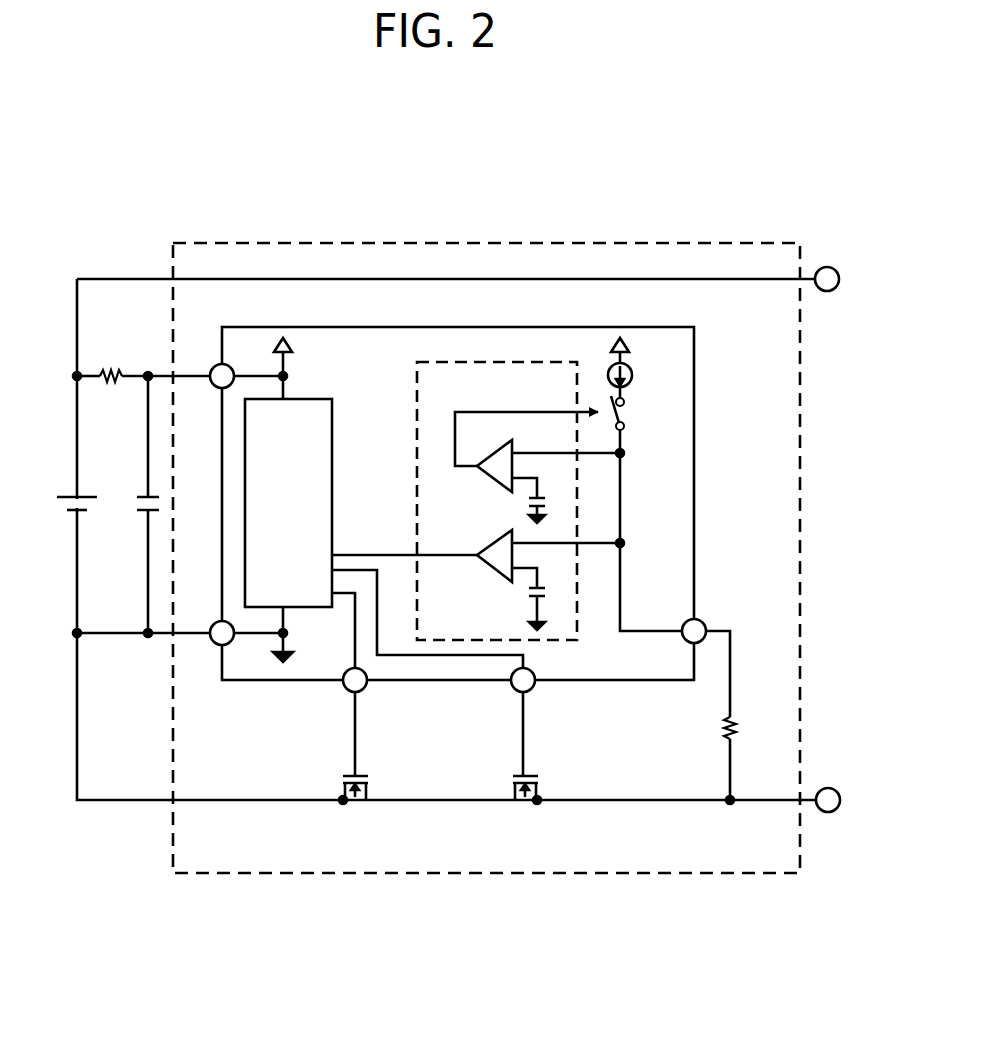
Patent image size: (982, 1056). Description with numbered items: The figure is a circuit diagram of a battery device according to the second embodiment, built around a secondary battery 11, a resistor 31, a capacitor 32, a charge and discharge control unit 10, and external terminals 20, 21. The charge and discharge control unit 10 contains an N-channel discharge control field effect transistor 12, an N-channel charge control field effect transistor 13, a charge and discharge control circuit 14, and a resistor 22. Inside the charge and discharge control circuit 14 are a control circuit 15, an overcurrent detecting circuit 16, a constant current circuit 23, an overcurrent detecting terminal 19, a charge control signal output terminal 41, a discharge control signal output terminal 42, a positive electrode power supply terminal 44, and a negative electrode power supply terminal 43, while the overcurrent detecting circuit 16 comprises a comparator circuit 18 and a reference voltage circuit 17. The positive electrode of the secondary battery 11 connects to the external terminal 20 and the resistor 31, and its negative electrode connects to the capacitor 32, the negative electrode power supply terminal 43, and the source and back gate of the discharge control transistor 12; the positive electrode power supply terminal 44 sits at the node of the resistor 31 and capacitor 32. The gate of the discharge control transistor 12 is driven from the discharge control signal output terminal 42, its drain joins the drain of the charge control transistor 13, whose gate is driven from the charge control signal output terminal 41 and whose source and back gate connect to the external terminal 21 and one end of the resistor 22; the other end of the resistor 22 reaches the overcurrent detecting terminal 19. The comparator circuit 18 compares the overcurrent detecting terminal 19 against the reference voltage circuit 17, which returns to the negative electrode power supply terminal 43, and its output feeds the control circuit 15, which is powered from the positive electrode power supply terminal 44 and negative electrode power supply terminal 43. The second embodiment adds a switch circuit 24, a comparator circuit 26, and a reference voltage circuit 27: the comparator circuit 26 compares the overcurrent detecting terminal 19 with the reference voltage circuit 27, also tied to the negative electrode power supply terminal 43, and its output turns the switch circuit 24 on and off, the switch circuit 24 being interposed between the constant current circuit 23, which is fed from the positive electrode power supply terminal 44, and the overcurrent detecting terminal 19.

The charge and discharge control unit 10 is at (803, 395).
The secondary battery 11 is at (90, 497).
The N-channel discharge control field effect transistor 12 is at (346, 806).
The N-channel charge control field effect transistor 13 is at (522, 806).
The charge and discharge control circuit 14 is at (698, 335).
The control circuit 15 is at (305, 398).
The overcurrent detecting circuit 16 is at (582, 643).
The reference voltage circuit 17 is at (527, 598).
The comparator circuit 18 is at (483, 575).
The overcurrent detecting terminal 19 is at (704, 622).
The external terminal 20 is at (834, 268).
The external terminal 21 is at (836, 789).
The resistor 22 is at (740, 710).
The constant current circuit 23 is at (632, 370).
The switch circuit 24 is at (628, 425).
The comparator circuit 26 is at (485, 480).
The reference voltage circuit 27 is at (527, 505).
The resistor 31 is at (112, 372).
The capacitor 32 is at (135, 514).
The charge control signal output terminal 41 is at (513, 690).
The discharge control signal output terminal 42 is at (345, 690).
The negative electrode power supply terminal 43 is at (213, 645).
The positive electrode power supply terminal 44 is at (215, 365).